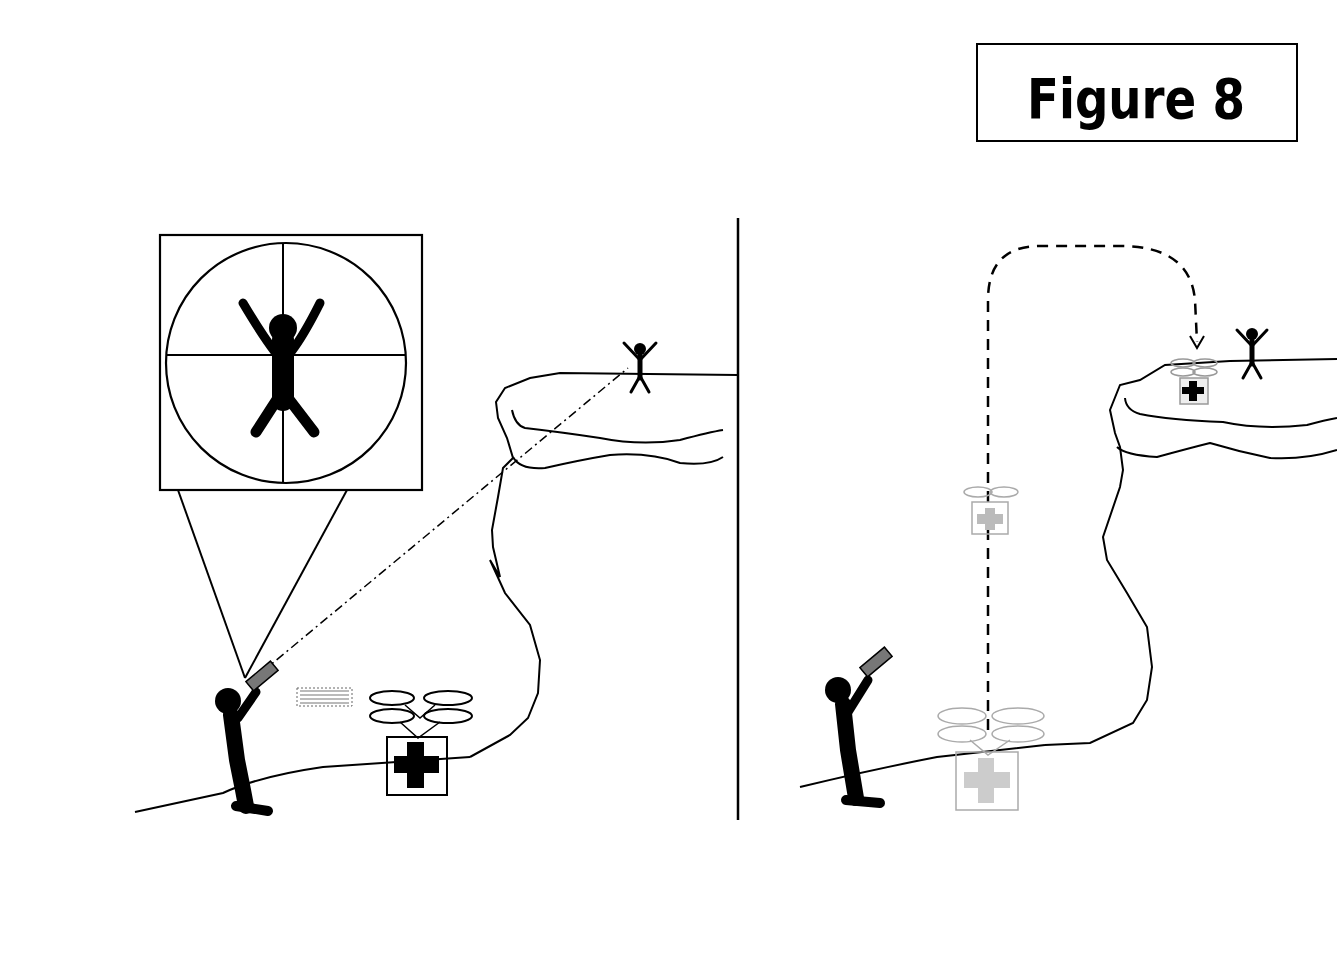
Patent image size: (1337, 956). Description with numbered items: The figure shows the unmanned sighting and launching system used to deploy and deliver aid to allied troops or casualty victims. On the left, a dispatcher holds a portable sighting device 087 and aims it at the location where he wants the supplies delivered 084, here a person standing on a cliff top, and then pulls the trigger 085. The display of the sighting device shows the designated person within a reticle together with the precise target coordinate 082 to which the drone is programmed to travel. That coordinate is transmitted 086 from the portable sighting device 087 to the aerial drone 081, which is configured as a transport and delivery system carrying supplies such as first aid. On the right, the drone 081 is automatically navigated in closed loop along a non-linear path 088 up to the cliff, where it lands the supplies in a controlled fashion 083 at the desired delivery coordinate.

The aerial drone 081 is at (474, 712).
The precise target coordinate 082 is at (345, 425).
The controlled landing of supplies 083 is at (1175, 383).
The delivery location 084 is at (298, 367).
The trigger pull 085 is at (260, 715).
The transmission of target coordinate 086 is at (322, 676).
The portable sighting device 087 is at (240, 678).
The non-linear navigation path 088 is at (967, 352).